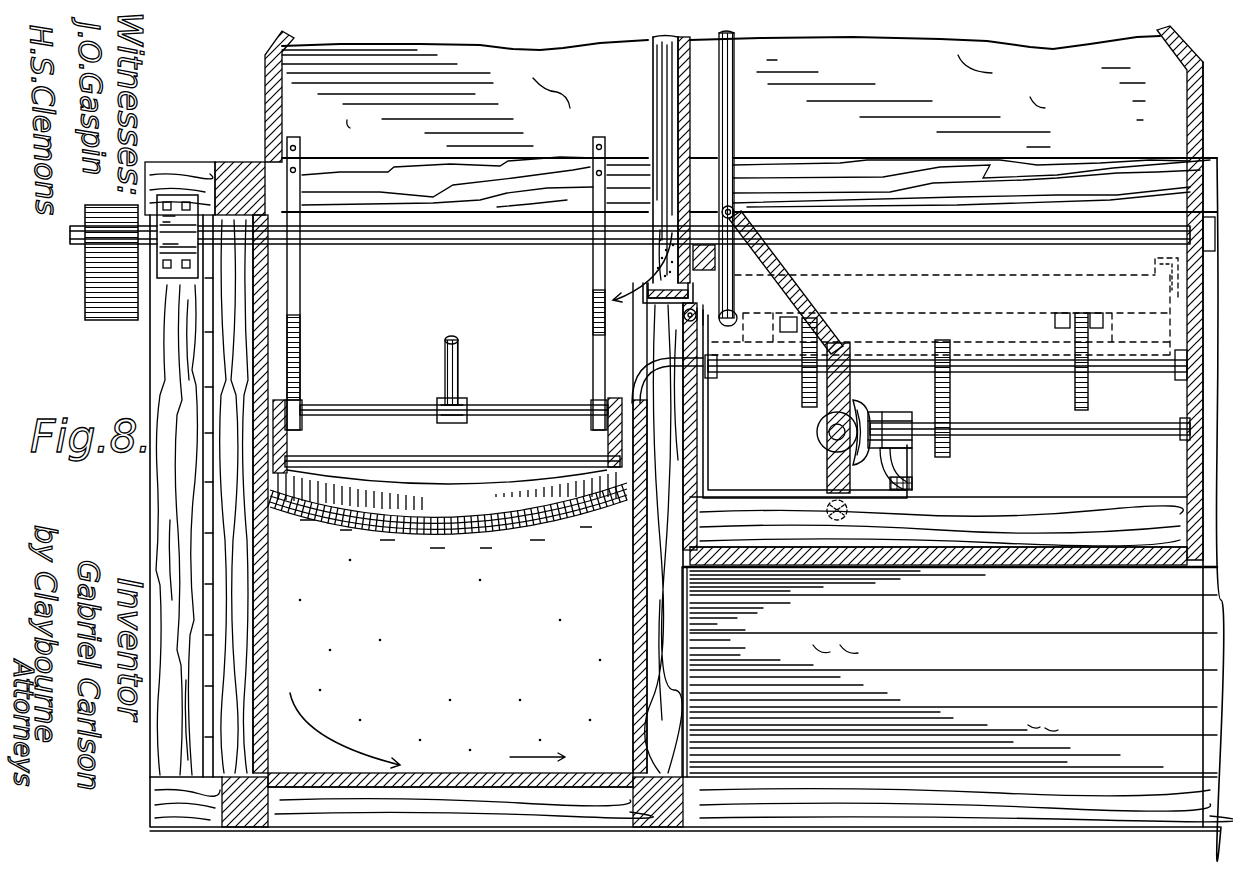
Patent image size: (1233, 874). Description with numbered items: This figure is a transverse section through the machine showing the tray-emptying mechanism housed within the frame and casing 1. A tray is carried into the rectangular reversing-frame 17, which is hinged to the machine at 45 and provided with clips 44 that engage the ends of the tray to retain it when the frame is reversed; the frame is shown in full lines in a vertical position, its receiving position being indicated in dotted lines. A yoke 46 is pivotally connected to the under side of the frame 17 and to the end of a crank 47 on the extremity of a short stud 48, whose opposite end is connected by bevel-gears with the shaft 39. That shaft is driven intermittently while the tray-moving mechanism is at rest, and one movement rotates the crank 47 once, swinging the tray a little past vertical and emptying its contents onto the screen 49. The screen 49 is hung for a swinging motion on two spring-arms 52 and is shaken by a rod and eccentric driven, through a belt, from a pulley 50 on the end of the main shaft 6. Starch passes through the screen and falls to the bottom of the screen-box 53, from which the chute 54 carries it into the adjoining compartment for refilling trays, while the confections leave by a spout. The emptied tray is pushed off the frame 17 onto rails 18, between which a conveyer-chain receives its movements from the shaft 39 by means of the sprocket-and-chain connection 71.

The frame and casing 1 is at (689, 443).
The main shaft 6 is at (450, 240).
The reversing-frame 17 is at (734, 118).
The rails 18 is at (785, 333).
The shaft 39 is at (990, 434).
The clips 44 is at (1160, 258).
The hinge 45 is at (683, 320).
The yoke 46 is at (805, 305).
The crank 47 is at (823, 402).
The short stud 48 is at (823, 440).
The screen 49 is at (340, 433).
The pulley 50 is at (141, 257).
The spring-arms 52 is at (300, 285).
The screen-box 53 is at (274, 567).
The chute 54 is at (448, 509).
The sprocket-and-chain connection 71 is at (951, 388).